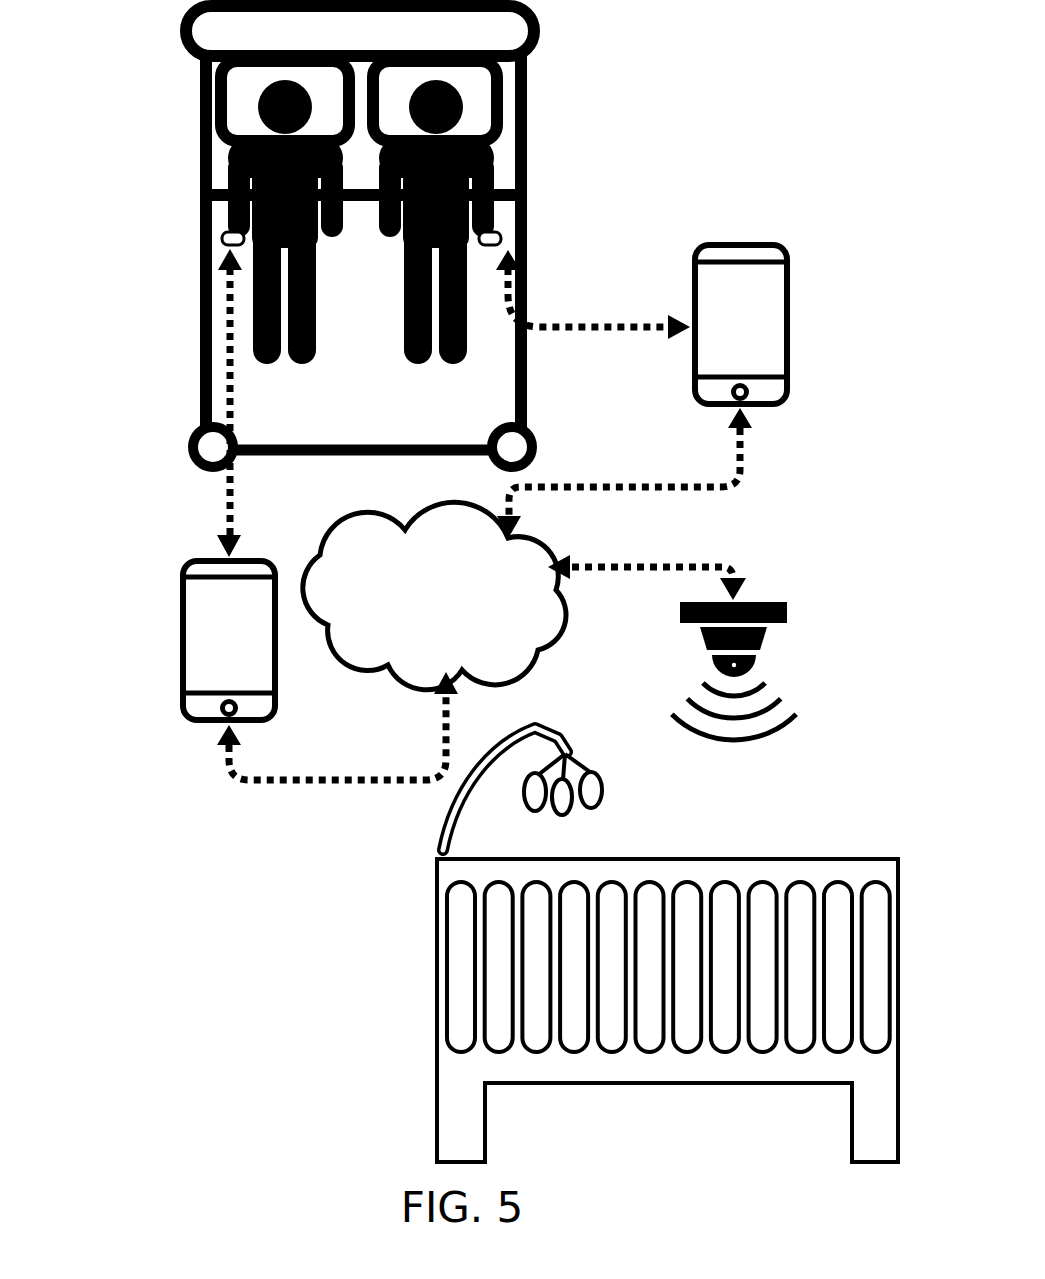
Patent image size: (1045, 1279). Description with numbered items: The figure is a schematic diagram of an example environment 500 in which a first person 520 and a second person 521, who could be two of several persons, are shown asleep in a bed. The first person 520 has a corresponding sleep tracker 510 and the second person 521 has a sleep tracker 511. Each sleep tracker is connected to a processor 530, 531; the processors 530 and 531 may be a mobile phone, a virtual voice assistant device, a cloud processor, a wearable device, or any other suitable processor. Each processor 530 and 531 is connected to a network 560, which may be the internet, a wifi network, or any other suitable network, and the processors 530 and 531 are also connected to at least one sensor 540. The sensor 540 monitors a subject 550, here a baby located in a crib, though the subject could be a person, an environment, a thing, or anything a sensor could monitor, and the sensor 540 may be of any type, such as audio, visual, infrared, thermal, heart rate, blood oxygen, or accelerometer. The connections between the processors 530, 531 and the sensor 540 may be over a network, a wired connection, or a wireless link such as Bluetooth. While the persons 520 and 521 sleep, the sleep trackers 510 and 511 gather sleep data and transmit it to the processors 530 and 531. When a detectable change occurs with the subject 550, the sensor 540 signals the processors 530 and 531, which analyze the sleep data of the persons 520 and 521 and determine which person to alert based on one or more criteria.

The schematic environment 500 is at (765, 128).
The sleep tracker 510 is at (503, 235).
The sleep tracker 511 is at (225, 248).
The first person 520 is at (485, 163).
The second person 521 is at (240, 172).
The processor 530 is at (182, 590).
The processor 531 is at (790, 275).
The sensor 540 is at (775, 607).
The subject 550 is at (775, 860).
The network 560 is at (434, 596).